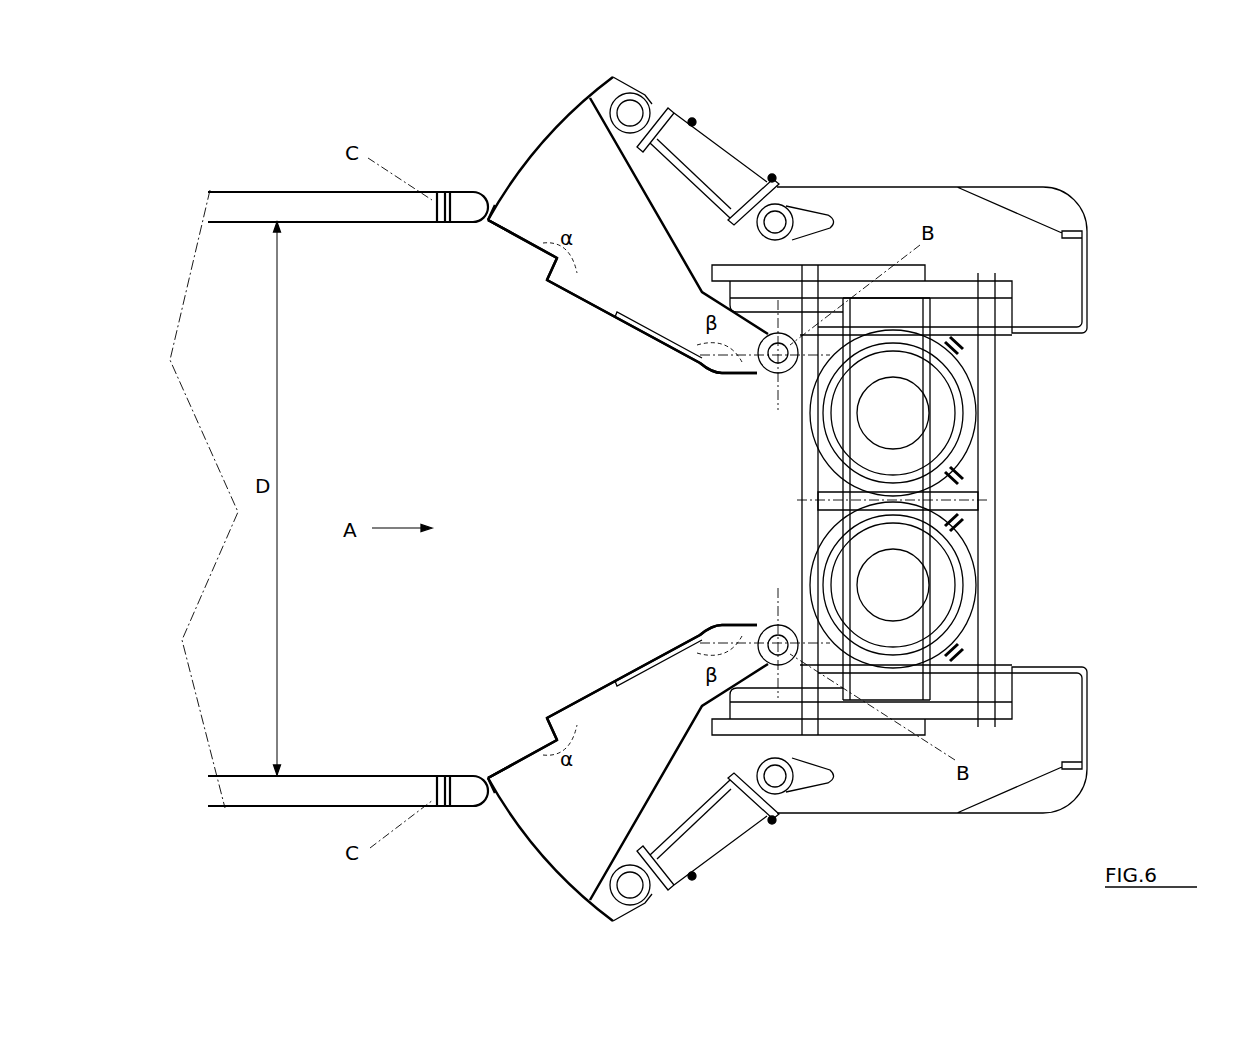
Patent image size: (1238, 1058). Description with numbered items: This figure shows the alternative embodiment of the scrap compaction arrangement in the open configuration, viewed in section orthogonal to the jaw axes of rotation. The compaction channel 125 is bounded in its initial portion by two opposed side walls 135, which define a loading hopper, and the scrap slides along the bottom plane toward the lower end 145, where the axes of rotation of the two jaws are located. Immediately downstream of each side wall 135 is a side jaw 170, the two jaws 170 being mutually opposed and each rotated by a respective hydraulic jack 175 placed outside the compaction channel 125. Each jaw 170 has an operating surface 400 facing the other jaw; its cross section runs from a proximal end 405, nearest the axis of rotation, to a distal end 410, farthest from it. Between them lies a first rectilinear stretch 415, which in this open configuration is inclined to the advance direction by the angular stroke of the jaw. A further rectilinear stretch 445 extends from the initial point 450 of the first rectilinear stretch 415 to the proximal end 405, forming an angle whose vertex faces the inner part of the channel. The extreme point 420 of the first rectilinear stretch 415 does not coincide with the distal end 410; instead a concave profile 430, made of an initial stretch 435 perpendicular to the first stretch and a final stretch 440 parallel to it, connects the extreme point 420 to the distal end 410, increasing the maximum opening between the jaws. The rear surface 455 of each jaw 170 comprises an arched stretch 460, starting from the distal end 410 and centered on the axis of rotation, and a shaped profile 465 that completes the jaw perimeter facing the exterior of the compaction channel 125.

The compaction channel 125 is at (400, 479).
The side wall 135 is at (320, 803).
The lower end 145 is at (935, 520).
The side jaw 170 is at (613, 772).
The hydraulic jack 175 is at (735, 827).
The operating surface 400 is at (603, 656).
The proximal end 405 is at (870, 597).
The distal end 410 is at (482, 771).
The first rectilinear stretch 415 is at (655, 665).
The extreme point 420 is at (543, 708).
The concave profile 430 is at (536, 732).
The initial stretch 435 is at (577, 733).
The final stretch 440 is at (487, 784).
The further rectilinear stretch 445 is at (772, 623).
The initial point 450 is at (706, 617).
The rear surface 455 is at (671, 802).
The arched stretch 460 is at (533, 848).
The shaped profile 465 is at (760, 778).